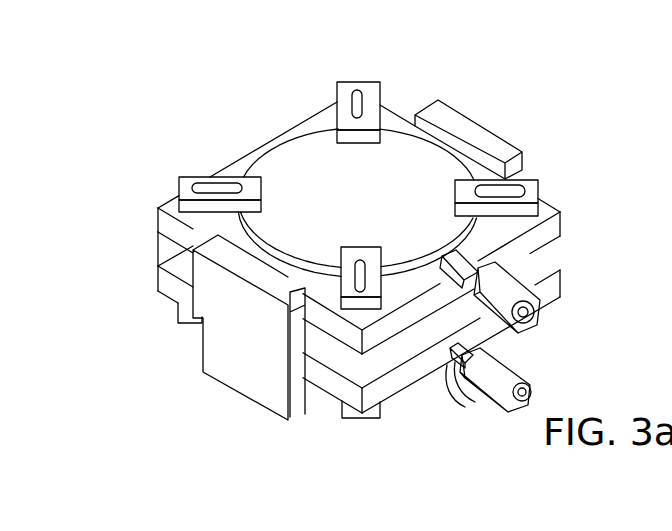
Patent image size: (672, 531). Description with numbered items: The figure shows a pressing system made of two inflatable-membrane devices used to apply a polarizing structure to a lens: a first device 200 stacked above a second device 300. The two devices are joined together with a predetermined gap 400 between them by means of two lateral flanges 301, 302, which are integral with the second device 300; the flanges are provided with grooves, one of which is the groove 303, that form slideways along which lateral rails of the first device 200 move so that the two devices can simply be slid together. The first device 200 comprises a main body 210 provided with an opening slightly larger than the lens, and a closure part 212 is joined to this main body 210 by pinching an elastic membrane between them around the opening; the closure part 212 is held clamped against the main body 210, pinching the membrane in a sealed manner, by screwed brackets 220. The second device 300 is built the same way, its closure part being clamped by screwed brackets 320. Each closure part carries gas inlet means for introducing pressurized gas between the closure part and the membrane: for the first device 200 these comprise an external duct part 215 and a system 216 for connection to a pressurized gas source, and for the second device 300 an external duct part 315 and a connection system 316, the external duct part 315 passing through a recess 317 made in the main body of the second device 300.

The first device 200 is at (287, 125).
The main body 210 is at (558, 213).
The closure part 212 is at (398, 155).
The screwed brackets 220 is at (350, 80).
The lateral flange 302 is at (475, 120).
The second device 300 is at (412, 384).
The screwed brackets 320 is at (177, 313).
The lateral flange 301 is at (230, 380).
The groove 303 is at (298, 310).
The predetermined gap 400 is at (167, 252).
The external duct part 215 is at (478, 262).
The connection system 216 is at (545, 297).
The connection system 316 is at (513, 363).
The external duct part 315 is at (458, 362).
The recess 317 is at (438, 373).